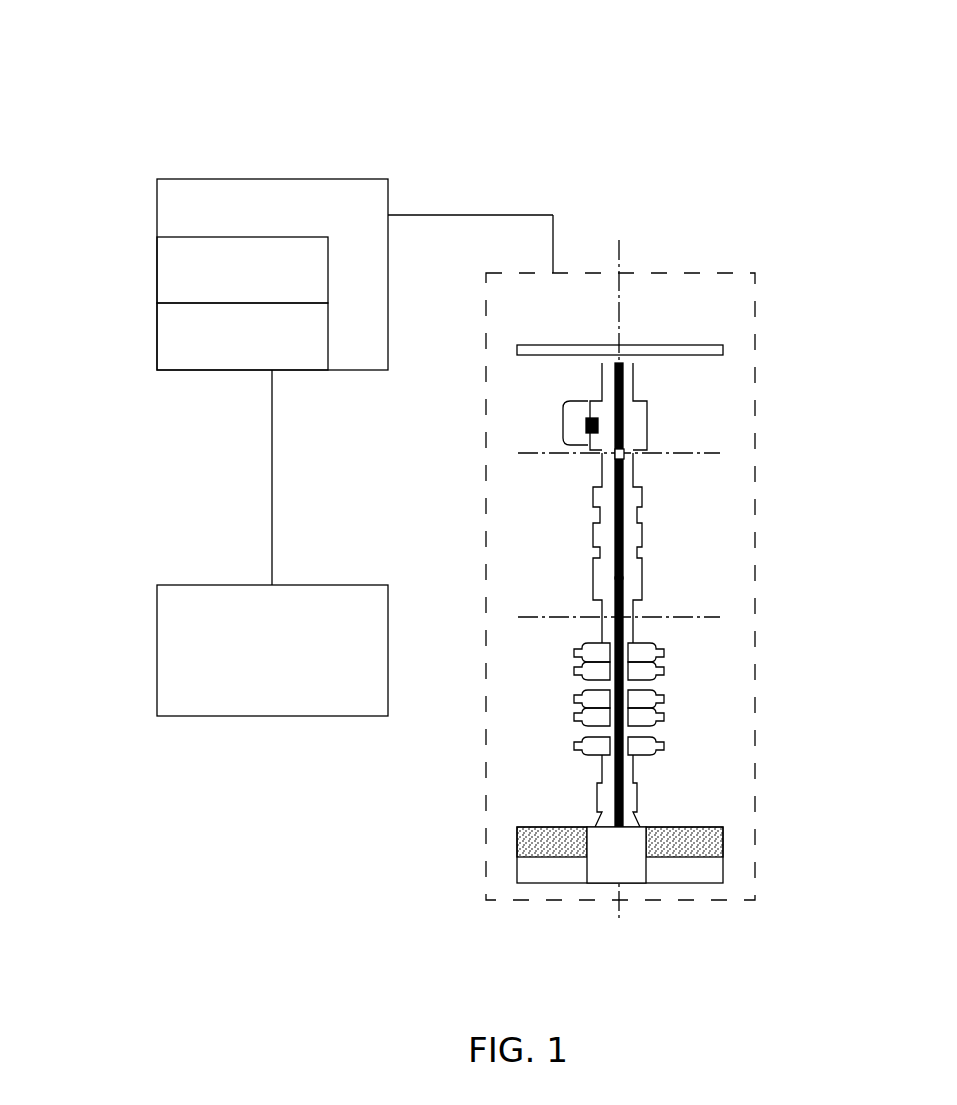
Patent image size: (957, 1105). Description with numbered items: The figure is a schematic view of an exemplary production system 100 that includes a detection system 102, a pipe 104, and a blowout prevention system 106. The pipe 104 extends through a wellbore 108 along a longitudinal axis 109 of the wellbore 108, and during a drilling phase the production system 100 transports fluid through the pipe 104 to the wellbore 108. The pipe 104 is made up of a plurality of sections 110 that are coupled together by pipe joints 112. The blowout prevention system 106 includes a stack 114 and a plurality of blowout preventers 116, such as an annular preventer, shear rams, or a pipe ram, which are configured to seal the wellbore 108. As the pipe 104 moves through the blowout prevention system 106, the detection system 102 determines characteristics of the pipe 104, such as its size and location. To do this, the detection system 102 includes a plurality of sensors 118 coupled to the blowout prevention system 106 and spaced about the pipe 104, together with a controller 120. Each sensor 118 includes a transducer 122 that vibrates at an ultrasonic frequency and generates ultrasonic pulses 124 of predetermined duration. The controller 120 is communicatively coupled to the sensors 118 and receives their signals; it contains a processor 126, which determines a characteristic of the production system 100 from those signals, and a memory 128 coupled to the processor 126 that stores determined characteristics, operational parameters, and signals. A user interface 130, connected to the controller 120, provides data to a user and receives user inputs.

The production system 100 is at (730, 197).
The detection system 102 is at (208, 62).
The pipe 104 is at (623, 420).
The blowout prevention (BOP) system 106 is at (665, 632).
The wellbore 108 is at (587, 870).
The longitudinal axis 109 is at (620, 248).
The sections 110 is at (623, 440).
The pipe joints 112 is at (615, 460).
The stack 114 is at (601, 628).
The blowout preventers 116 is at (593, 530).
The sensors 118 is at (563, 425).
The controller 120 is at (271, 179).
The transducer 122 is at (586, 423).
The ultrasonic pulses 124 is at (613, 426).
The processor 126 is at (157, 342).
The memory 128 is at (157, 268).
The user interface 130 is at (157, 650).